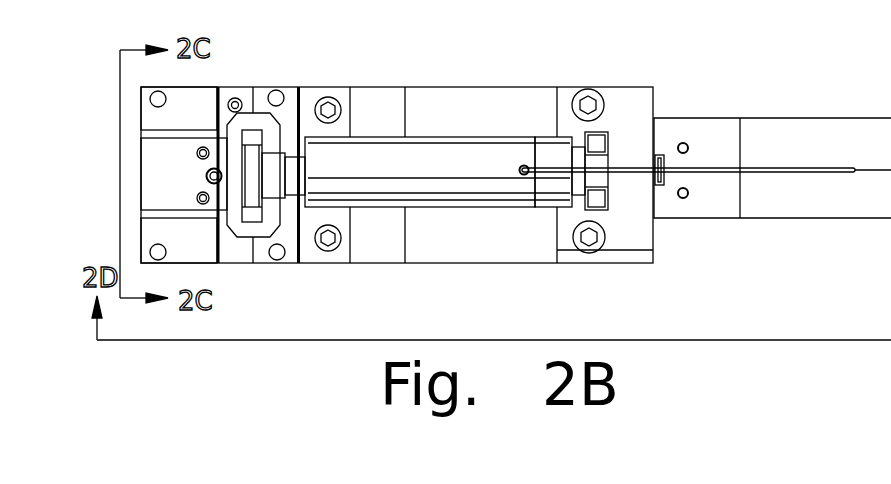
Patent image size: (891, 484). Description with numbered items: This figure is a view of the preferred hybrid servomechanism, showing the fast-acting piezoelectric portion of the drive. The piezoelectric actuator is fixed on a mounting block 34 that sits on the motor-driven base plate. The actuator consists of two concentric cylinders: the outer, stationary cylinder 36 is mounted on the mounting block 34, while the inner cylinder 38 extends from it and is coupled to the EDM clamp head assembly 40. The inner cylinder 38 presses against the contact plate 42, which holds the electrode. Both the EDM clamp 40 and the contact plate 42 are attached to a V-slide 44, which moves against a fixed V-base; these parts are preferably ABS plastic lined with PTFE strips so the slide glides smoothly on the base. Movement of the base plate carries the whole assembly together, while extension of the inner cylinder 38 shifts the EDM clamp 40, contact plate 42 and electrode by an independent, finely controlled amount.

The mounting block 34 is at (633, 87).
The outer cylinder 36 is at (450, 137).
The inner cylinder 38 is at (299, 135).
The EDM clamp head assembly 40 is at (160, 137).
The contact plate 42 is at (165, 217).
The V-slide 44 is at (152, 117).